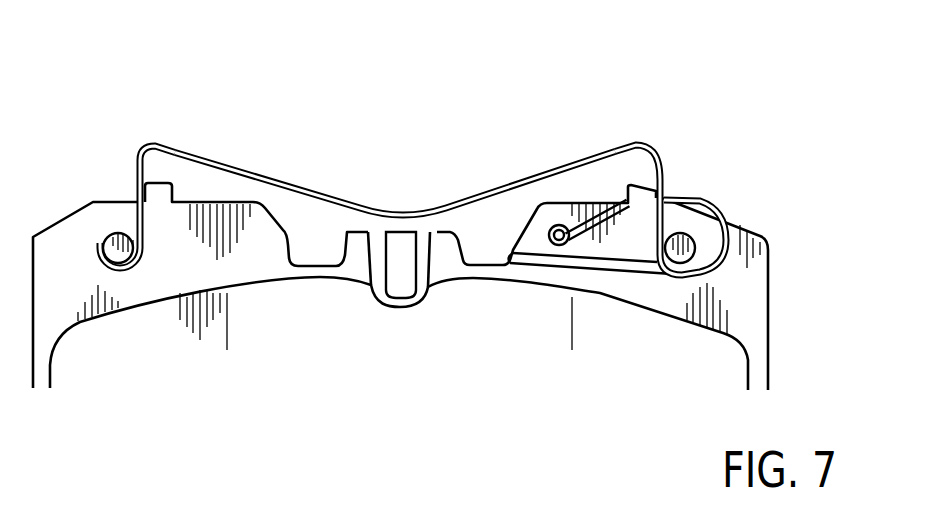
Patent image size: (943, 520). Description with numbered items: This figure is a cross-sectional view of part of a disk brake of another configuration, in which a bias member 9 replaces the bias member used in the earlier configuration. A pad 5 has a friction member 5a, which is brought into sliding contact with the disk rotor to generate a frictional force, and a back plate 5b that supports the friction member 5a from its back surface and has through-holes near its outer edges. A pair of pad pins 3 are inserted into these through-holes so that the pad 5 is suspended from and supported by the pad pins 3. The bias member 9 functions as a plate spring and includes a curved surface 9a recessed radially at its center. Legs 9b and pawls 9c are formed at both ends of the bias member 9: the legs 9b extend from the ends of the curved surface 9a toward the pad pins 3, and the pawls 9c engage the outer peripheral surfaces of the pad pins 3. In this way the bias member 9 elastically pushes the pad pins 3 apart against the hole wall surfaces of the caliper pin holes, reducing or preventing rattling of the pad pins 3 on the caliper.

The pad pin 3 is at (107, 233).
The pad 5 is at (529, 165).
The friction member 5a is at (487, 295).
The back plate 5b is at (442, 247).
The bias member 9 is at (450, 158).
The curved surface 9a is at (233, 163).
The leg 9b is at (136, 182).
The pawl 9c is at (134, 236).